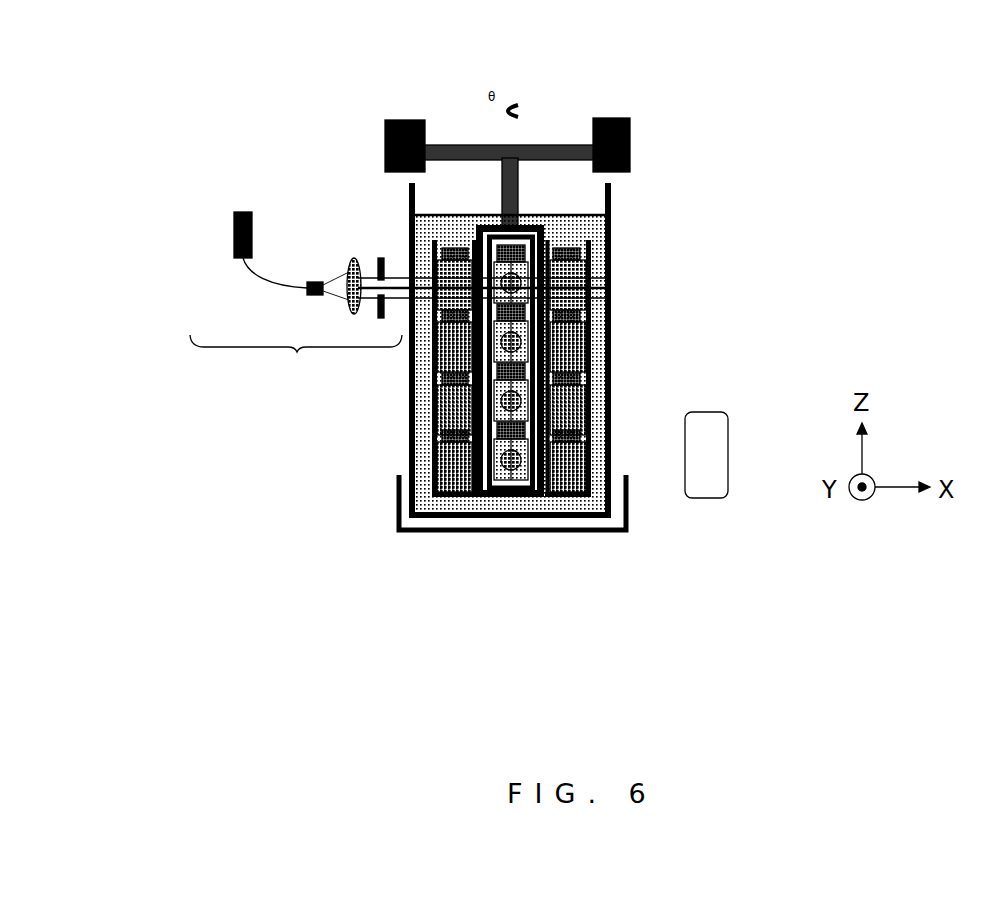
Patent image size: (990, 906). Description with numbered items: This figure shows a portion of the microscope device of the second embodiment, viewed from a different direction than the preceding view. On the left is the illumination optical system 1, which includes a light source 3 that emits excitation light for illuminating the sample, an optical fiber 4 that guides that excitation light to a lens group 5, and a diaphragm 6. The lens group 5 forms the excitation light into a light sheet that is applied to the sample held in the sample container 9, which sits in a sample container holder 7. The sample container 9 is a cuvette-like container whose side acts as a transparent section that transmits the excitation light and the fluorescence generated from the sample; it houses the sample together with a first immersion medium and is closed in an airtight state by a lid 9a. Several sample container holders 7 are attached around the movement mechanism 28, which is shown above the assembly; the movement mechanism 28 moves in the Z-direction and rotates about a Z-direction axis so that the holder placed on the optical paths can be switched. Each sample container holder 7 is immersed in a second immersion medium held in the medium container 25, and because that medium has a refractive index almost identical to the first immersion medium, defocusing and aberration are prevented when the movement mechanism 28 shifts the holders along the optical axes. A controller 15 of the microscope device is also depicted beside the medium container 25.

The illumination optical system 1 is at (296, 364).
The light source 3 is at (234, 232).
The optical fiber 4 is at (258, 277).
The lens group 5 is at (352, 262).
The diaphragm 6 is at (380, 257).
The sample container holder 7 is at (489, 497).
The sample container 9 is at (525, 497).
The lid 9a is at (543, 450).
The controller 15 is at (685, 457).
The medium container 25 is at (410, 428).
The movement mechanism 28 is at (613, 115).